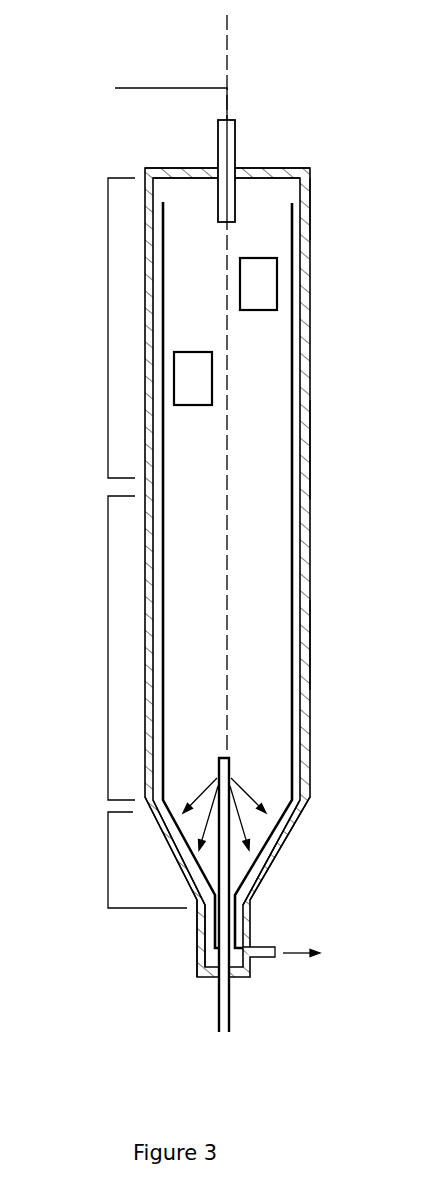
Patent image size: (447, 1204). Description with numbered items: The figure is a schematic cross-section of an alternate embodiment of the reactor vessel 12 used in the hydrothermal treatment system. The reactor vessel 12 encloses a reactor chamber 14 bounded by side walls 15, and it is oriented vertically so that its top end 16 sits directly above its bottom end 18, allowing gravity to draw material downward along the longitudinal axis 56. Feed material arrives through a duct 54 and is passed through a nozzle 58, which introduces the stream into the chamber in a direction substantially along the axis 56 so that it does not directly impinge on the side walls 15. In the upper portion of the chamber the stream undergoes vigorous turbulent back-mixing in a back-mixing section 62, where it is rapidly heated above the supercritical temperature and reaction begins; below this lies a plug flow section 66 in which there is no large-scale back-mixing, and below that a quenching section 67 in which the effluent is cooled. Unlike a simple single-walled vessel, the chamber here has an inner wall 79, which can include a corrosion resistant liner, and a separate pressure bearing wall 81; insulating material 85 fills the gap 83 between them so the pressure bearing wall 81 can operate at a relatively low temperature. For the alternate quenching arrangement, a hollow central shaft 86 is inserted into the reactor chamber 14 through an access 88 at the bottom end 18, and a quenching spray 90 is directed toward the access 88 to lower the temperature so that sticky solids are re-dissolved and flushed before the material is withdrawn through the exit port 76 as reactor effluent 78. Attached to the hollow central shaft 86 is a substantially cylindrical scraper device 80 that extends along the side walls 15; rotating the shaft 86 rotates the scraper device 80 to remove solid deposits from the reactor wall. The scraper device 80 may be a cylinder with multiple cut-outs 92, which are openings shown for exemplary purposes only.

The reactor vessel 12 is at (310, 372).
The reactor chamber 14 is at (258, 538).
The side walls 15 is at (310, 475).
The top end 16 is at (280, 168).
The bottom end 18 is at (290, 848).
The duct 54 is at (172, 88).
The longitudinal axis 56 is at (228, 38).
The nozzle 58 is at (235, 132).
The back-mixing section 62 is at (108, 285).
The plug flow section 66 is at (108, 548).
The quenching section 67 is at (108, 840).
The exit port 76 is at (265, 958).
The reactor effluent 78 is at (295, 950).
The inner wall 79 is at (310, 430).
The scraper device 80 is at (292, 330).
The pressure bearing wall 81 is at (307, 665).
The gap 83 is at (307, 628).
The insulating material 85 is at (310, 210).
The hollow central shaft 86 is at (219, 1010).
The access 88 is at (200, 932).
The quenching spray 90 is at (243, 778).
The cut-outs 92 is at (174, 378).